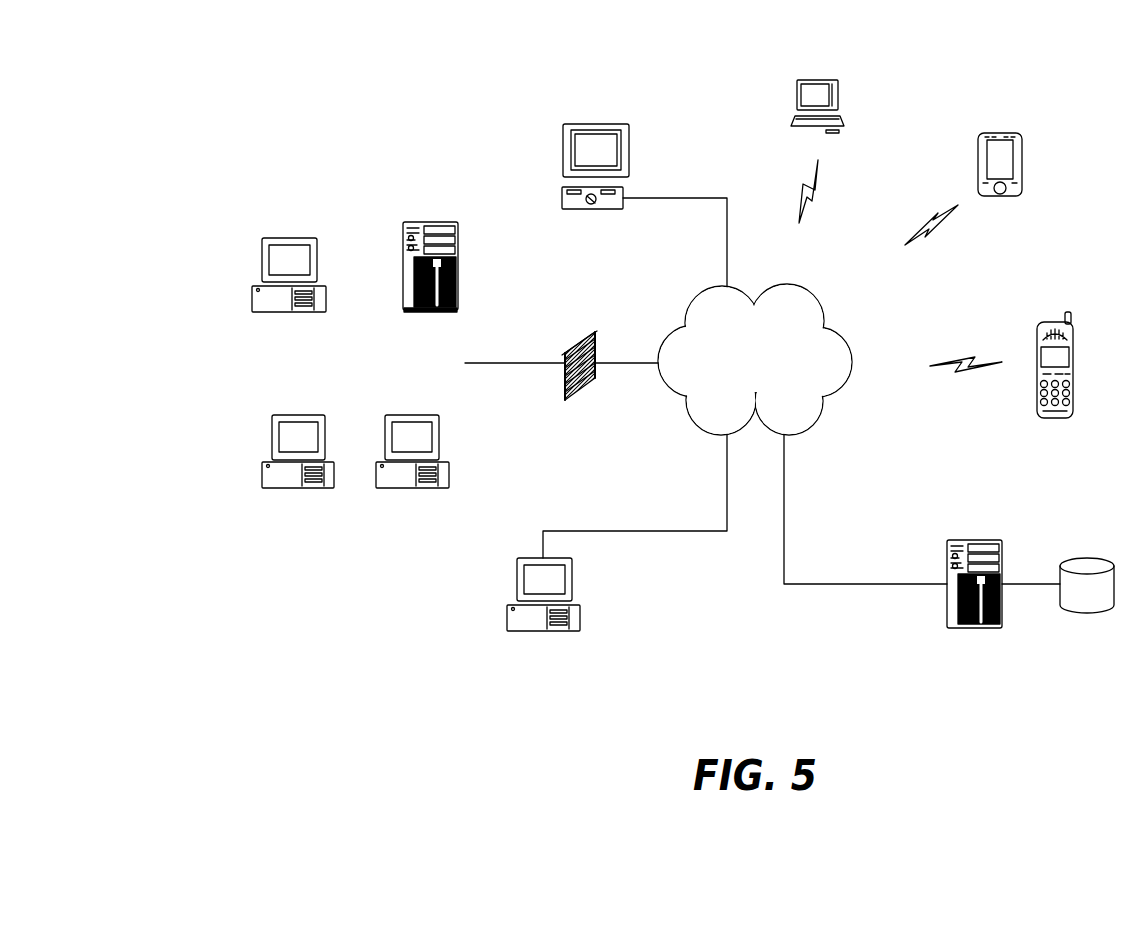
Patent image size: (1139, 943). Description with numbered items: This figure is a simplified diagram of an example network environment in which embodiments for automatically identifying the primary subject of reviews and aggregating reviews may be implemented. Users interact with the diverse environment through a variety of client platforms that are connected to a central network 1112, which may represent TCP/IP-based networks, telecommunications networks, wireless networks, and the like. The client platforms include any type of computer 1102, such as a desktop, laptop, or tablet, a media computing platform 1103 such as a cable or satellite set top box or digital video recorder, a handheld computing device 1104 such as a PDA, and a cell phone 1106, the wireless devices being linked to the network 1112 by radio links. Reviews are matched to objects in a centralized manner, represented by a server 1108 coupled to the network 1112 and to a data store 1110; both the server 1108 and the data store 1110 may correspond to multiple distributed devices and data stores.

The computer 1102 is at (262, 262).
The media computing platform 1103 is at (560, 195).
The handheld computing device 1104 is at (984, 135).
The cell phone 1106 is at (1040, 325).
The server 1108 is at (955, 540).
The data store 1110 is at (1088, 558).
The network 1112 is at (699, 300).